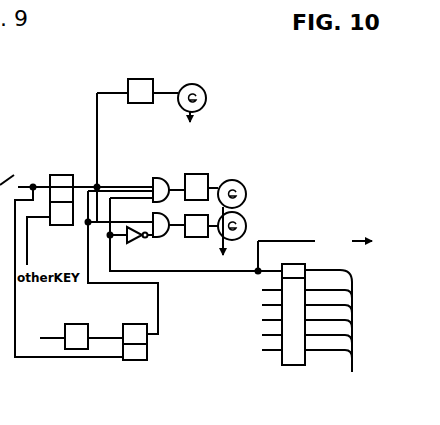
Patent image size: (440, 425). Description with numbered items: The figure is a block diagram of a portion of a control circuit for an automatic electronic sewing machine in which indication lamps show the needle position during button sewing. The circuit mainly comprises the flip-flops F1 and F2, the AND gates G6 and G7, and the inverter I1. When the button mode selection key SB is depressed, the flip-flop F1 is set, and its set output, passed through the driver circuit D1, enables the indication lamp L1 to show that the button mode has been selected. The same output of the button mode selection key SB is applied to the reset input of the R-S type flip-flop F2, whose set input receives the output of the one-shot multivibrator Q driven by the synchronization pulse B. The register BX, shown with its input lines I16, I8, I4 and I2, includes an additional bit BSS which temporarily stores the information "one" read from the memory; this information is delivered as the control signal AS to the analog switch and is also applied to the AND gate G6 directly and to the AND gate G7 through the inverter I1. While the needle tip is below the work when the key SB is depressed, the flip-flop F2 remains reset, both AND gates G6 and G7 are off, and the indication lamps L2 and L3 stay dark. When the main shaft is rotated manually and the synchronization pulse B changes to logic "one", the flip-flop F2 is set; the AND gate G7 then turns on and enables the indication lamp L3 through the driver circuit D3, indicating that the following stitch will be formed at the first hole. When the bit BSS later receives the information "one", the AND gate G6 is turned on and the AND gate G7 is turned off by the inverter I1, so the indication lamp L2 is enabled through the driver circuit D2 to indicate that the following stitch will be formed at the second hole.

The button mode selection key SB is at (10, 171).
The flip-flop F1 is at (58, 175).
The R-S type flip-flop F2 is at (135, 334).
The driver circuit D1 is at (137, 91).
The driver circuit D2 is at (205, 174).
The driver circuit D3 is at (200, 238).
The indication lamp L1 is at (210, 86).
The indication lamp L2 is at (248, 179).
The indication lamp L3 is at (247, 218).
The AND gate G6 is at (160, 178).
The AND gate G7 is at (163, 238).
The inverter I1 is at (130, 241).
The one-shot multivibrator Q is at (77, 324).
The synchronization pulse B is at (44, 340).
The control signal AS is at (314, 254).
The additional bit of register BX BSS is at (294, 262).
The register BX is at (298, 318).
The input line I16 is at (262, 291).
The input line I8 is at (263, 306).
The input line I4 is at (263, 321).
The input line I2 is at (263, 336).